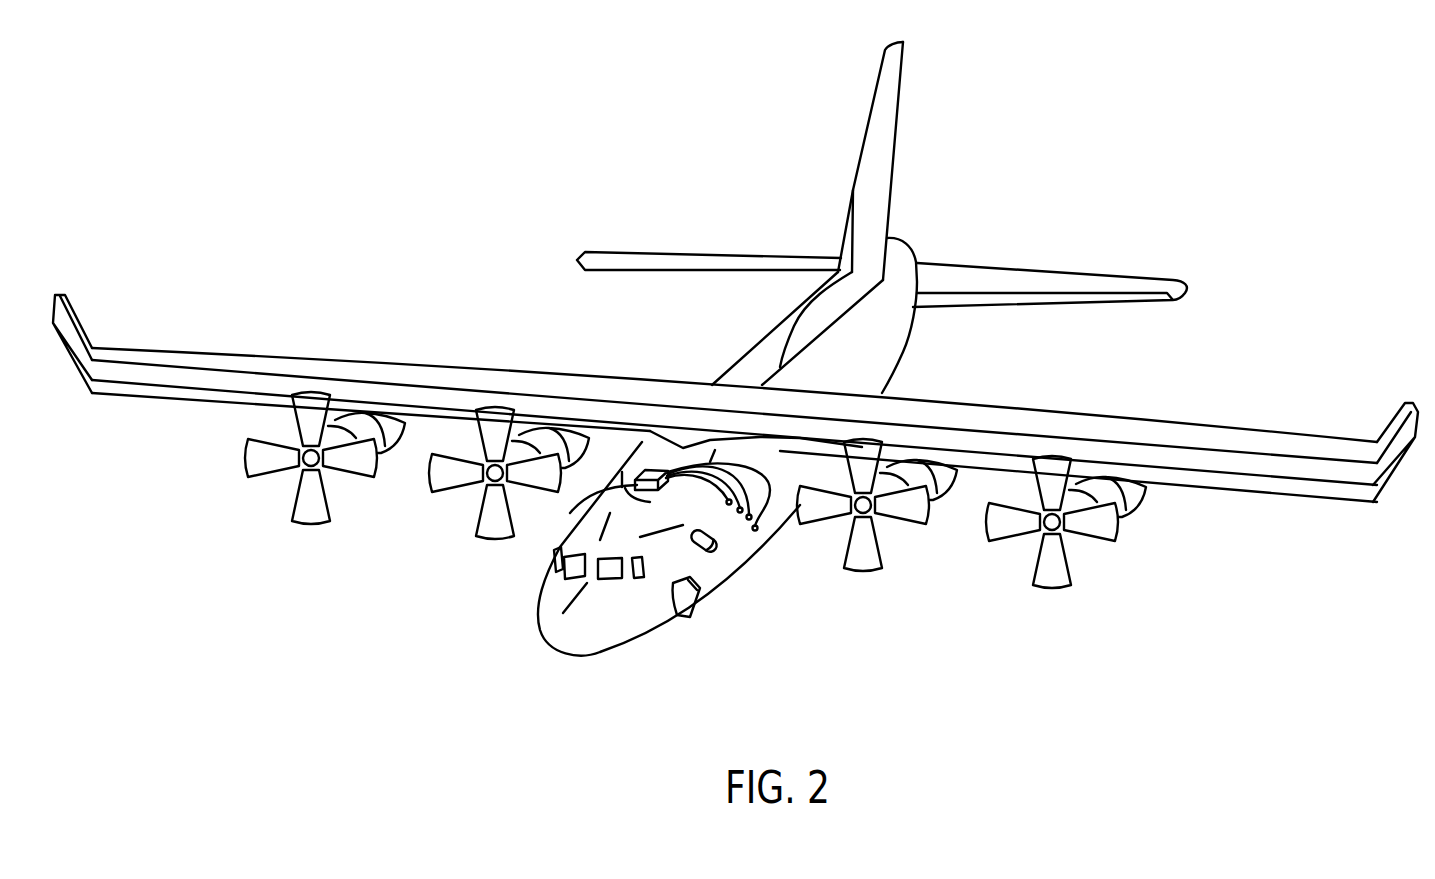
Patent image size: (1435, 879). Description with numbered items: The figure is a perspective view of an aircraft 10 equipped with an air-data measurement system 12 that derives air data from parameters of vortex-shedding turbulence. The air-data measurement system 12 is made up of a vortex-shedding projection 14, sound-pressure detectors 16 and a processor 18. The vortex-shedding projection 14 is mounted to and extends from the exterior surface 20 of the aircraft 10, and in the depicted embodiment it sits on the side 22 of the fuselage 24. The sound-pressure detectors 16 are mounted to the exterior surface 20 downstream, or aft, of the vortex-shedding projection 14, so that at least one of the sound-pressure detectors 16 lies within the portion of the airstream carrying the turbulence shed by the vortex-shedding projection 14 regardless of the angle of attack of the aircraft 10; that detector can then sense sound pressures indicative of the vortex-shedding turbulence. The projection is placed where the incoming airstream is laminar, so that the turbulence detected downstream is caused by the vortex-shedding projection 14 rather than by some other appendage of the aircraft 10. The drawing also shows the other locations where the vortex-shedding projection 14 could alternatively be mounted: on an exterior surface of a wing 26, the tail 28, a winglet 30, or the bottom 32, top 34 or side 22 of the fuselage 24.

The aircraft 10 is at (352, 168).
The air-data measurement system 12 is at (685, 437).
The vortex-shedding projection 14 is at (709, 558).
The sound-pressure detectors 16 is at (742, 530).
The processor 18 is at (572, 513).
The exterior surface 20 is at (667, 560).
The side 22 is at (877, 376).
The fuselage 24 is at (887, 350).
The wing 26 is at (1180, 430).
The tail 28 is at (902, 209).
The winglet 30 is at (120, 307).
The bottom 32 is at (545, 650).
The top 34 is at (753, 377).